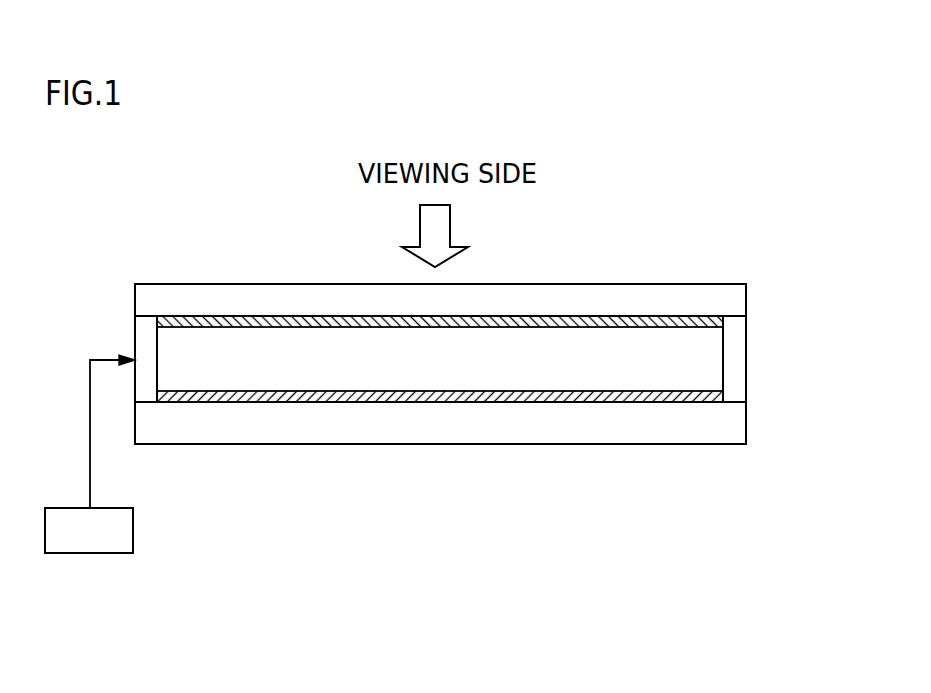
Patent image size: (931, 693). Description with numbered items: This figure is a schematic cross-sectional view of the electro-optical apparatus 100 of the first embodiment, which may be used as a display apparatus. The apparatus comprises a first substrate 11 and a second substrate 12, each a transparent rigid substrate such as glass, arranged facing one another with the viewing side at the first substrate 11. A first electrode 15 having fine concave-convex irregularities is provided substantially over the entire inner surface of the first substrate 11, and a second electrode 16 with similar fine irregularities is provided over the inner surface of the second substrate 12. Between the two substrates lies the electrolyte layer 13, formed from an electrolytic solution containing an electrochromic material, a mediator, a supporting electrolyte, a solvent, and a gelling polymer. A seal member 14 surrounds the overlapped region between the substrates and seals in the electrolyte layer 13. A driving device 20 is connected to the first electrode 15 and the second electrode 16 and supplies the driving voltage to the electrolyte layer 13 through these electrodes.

The electro-optical apparatus 100 is at (453, 574).
The first substrate 11 is at (746, 304).
The second substrate 12 is at (746, 427).
The electrolyte layer 13 is at (718, 372).
The seal member 14 is at (746, 346).
The first electrode 15 is at (658, 316).
The second electrode 16 is at (652, 403).
The driving device 20 is at (123, 508).